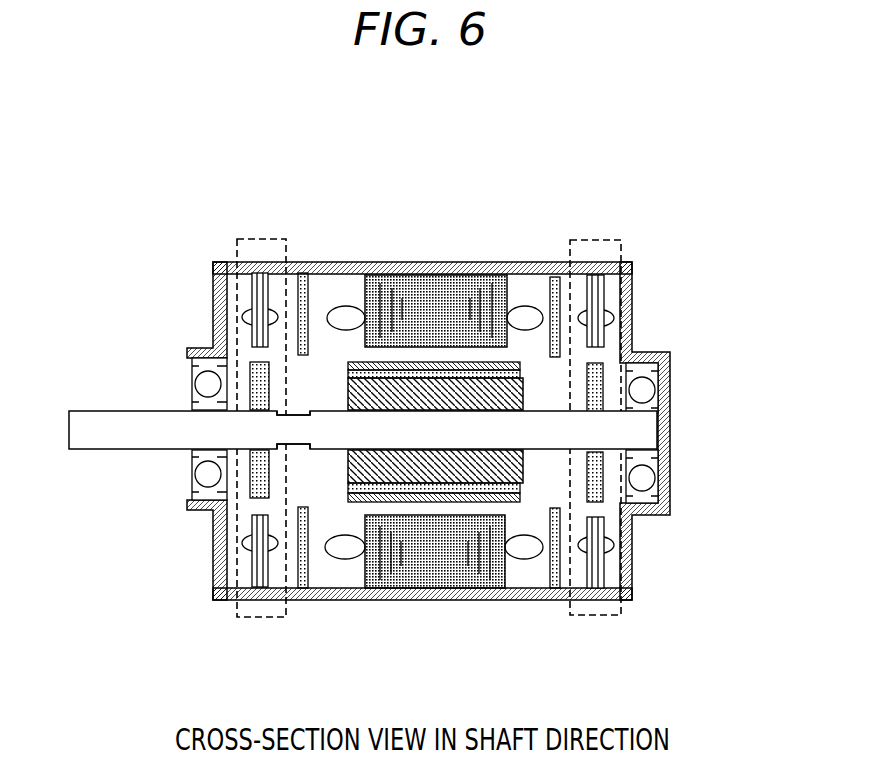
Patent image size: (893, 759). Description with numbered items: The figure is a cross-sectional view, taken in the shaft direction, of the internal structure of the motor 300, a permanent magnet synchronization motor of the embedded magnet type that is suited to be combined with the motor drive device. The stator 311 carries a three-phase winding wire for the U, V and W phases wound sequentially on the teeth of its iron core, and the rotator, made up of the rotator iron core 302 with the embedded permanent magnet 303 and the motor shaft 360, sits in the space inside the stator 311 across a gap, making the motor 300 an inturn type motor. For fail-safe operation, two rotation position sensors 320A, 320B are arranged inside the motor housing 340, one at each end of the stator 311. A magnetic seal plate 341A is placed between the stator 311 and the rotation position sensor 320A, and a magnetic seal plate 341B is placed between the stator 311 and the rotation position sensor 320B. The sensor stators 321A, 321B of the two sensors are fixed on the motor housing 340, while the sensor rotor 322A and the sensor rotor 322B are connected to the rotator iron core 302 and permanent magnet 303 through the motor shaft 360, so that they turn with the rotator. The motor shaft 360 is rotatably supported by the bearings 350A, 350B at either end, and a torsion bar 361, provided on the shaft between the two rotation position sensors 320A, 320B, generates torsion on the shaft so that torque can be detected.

The motor 300 is at (466, 374).
The rotator iron core 302 is at (400, 468).
The permanent magnet 303 is at (437, 490).
The stator 311 is at (410, 295).
The rotation position sensor 320A is at (242, 239).
The rotation position sensor 320B is at (582, 240).
The sensor stator 321A is at (252, 302).
The sensor stator 321B is at (597, 318).
The sensor rotor 322A is at (260, 363).
The sensor rotor 322B is at (603, 387).
The motor housing 340 is at (633, 278).
The magnetic seal plate 341A is at (305, 570).
The magnetic seal plate 341B is at (555, 575).
The bearing 350A is at (188, 472).
The bearing 350B is at (652, 493).
The motor shaft 360 is at (172, 422).
The torsion bar 361 is at (293, 433).